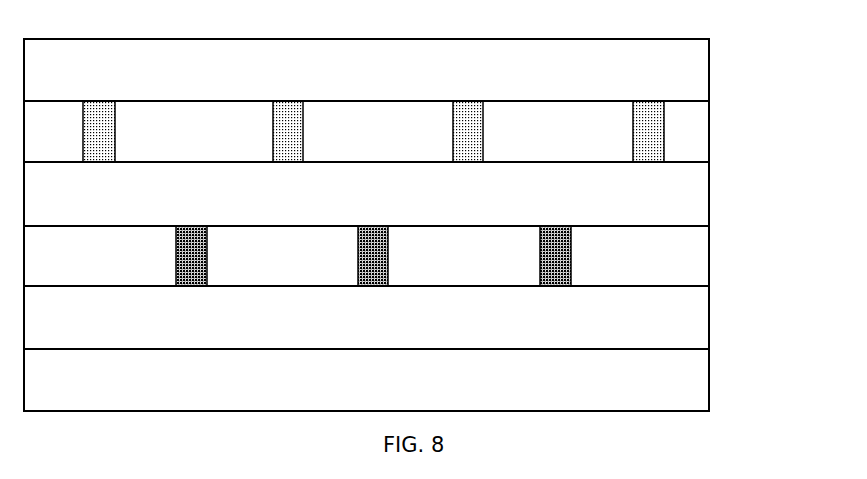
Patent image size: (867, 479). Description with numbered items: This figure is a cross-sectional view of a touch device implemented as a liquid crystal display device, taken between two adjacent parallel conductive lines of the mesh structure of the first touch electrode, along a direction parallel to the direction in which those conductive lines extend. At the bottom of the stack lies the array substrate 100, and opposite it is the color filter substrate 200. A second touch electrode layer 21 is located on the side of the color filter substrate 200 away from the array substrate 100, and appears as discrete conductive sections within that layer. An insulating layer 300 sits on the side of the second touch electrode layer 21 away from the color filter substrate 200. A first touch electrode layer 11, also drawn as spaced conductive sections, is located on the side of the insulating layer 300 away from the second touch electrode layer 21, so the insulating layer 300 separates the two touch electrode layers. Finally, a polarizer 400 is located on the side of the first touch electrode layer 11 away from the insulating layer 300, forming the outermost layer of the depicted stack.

The polarizer 400 is at (692, 70).
The insulating layer 300 is at (691, 209).
The color filter substrate 200 is at (691, 331).
The array substrate 100 is at (691, 385).
The first touch electrode layer 11 is at (97, 123).
The second touch electrode layer 21 is at (181, 280).